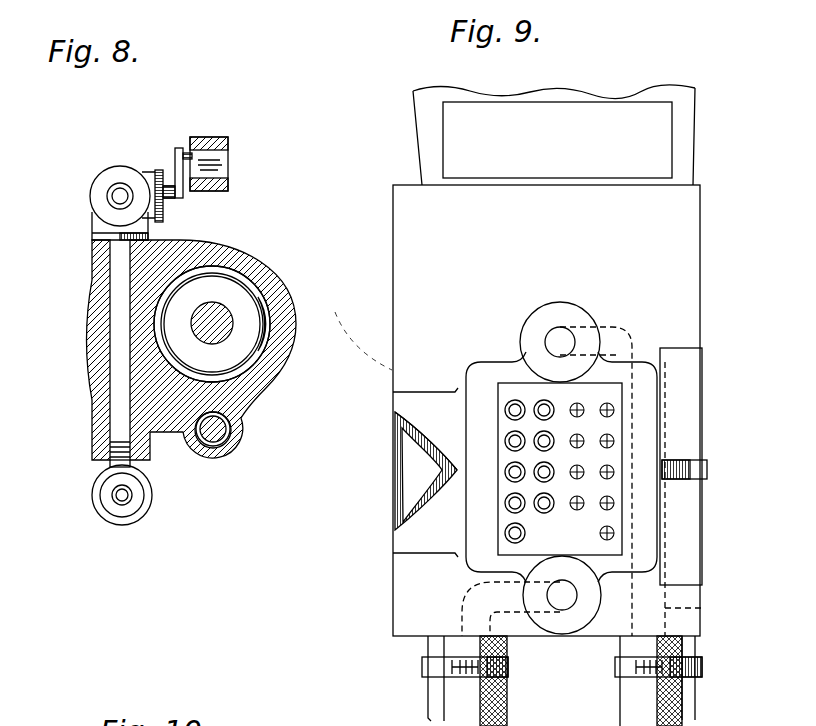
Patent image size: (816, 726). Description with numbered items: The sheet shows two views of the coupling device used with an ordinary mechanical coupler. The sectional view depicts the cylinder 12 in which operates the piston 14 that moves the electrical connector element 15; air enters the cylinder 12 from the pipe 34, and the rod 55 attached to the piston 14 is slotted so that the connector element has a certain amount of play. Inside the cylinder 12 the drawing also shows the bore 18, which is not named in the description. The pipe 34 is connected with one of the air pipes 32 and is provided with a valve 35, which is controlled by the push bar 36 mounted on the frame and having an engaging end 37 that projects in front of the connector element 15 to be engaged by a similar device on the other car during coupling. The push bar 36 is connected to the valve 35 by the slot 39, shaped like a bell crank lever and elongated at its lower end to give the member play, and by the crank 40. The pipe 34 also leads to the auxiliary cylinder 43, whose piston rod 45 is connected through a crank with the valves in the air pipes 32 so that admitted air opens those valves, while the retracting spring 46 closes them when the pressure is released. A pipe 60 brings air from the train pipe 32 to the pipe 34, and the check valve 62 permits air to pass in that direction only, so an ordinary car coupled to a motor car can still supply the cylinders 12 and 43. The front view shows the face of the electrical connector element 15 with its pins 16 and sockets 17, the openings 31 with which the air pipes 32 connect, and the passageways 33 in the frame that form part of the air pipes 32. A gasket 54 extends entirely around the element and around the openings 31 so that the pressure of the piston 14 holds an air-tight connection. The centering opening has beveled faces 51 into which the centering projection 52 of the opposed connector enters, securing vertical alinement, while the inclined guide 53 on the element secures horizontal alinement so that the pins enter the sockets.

In FIG. 8, the cylinder 12 is at (281, 311).
In FIG. 8, the piston 14 is at (245, 345).
In FIG. 8, the shaft bore 18 is at (182, 369).
In FIG. 8, the rod 55 is at (227, 300).
In FIG. 8, the pipe 60 is at (118, 362).
In FIG. 8, the auxiliary cylinder 43 is at (231, 434).
In FIG. 8, the piston rod 45 is at (212, 447).
In FIG. 8, the retracting spring 46 is at (225, 450).
In FIG. 8, the pipe 34 is at (110, 188).
In FIG. 8, the valve 35 is at (91, 206).
In FIG. 8, the push bar 36 is at (219, 137).
In FIG. 8, the slot 39 is at (228, 166).
In FIG. 8, the crank 40 is at (177, 164).
In FIG. 8, the check valve 62 is at (103, 501).
In FIG. 9, the engaging end 37 is at (660, 157).
In FIG. 9, the openings 31 is at (565, 338).
In FIG. 9, the passageways 33 is at (458, 618).
In FIG. 9, the electrical connector element 15 is at (503, 423).
In FIG. 9, the pins 16 is at (608, 508).
In FIG. 9, the sockets 17 is at (543, 508).
In FIG. 9, the beveled faces 51 is at (405, 511).
In FIG. 9, the centering projection 52 is at (708, 468).
In FIG. 9, the inclined guide 53 is at (403, 470).
In FIG. 9, the gaskets 54 is at (470, 543).
In FIG. 9, the air pipes 32 is at (507, 707).